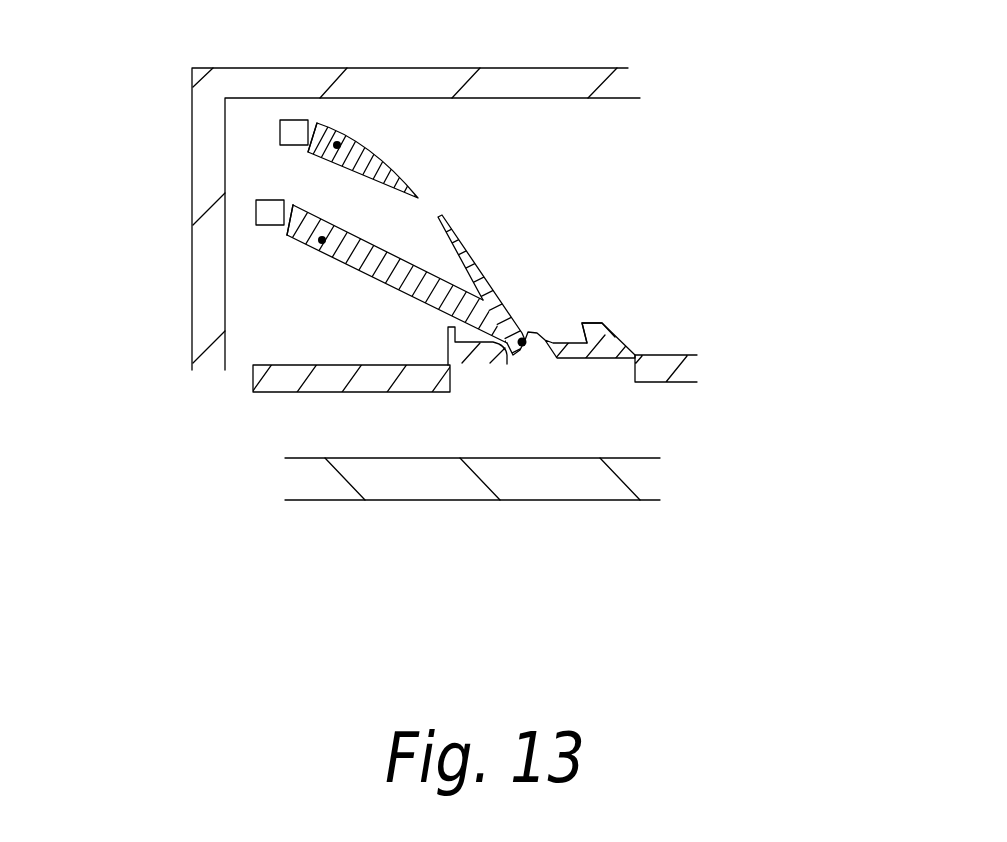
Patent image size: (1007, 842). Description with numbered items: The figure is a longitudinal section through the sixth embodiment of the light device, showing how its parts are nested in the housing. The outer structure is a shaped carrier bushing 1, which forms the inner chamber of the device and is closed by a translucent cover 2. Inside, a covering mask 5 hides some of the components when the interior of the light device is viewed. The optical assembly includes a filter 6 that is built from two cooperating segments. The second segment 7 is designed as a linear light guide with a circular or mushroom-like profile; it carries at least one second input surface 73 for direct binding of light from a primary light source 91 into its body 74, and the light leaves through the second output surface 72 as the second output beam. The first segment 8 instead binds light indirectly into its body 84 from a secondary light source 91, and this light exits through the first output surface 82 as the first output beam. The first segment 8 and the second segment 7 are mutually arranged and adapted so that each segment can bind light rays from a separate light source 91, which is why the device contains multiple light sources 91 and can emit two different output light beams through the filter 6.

The shaped carrier bushing 1 is at (190, 197).
The translucent cover 2 is at (312, 503).
The covering mask 5 is at (378, 396).
The filter 6 is at (559, 301).
The second segment 7 is at (492, 258).
The first segment 8 is at (583, 362).
The second output surface 72 is at (523, 346).
The second input surface 73 is at (310, 149).
The body 74 is at (340, 145).
The first output surface 82 is at (490, 362).
The body 84 is at (600, 343).
The light source 91 is at (277, 131).